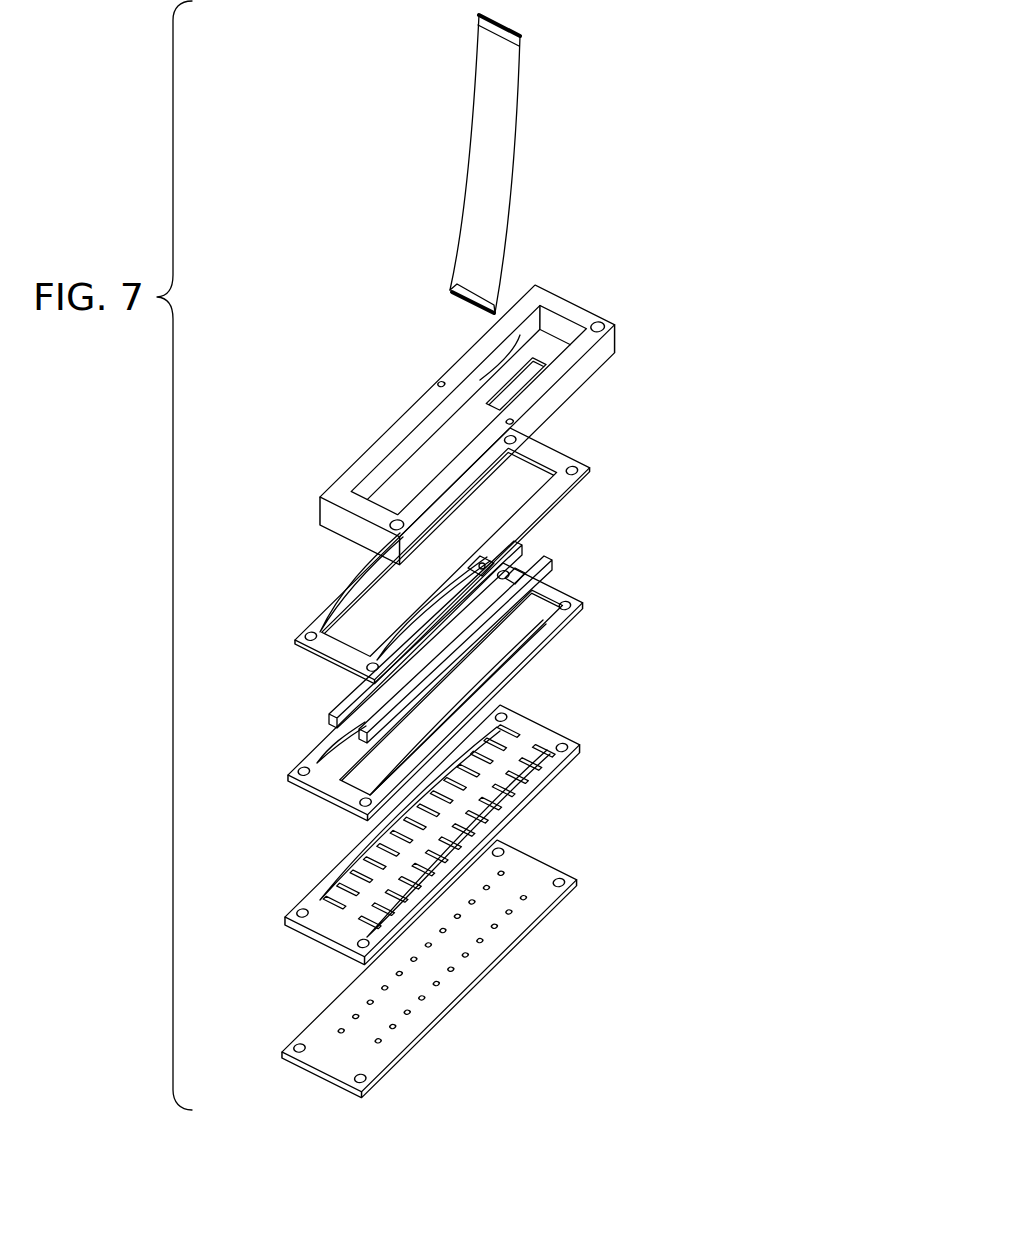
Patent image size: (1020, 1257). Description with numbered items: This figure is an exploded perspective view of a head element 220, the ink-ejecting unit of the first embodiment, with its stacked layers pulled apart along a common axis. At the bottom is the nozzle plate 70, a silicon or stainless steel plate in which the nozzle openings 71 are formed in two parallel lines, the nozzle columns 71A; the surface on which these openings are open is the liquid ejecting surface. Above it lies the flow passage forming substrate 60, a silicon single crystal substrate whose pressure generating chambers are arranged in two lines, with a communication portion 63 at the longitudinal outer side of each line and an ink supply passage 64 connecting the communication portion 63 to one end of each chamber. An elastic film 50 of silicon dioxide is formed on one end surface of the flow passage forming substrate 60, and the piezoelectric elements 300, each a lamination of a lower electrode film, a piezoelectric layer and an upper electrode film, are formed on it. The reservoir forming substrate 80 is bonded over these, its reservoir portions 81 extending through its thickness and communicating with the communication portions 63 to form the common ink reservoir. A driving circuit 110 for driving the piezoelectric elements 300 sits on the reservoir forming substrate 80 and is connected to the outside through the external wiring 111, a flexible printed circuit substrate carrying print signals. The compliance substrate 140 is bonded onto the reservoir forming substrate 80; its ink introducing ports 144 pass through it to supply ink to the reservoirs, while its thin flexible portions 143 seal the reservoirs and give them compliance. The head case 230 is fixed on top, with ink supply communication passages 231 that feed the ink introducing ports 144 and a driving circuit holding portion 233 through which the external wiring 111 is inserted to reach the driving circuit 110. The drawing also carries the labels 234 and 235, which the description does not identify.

The head element 220 is at (770, 222).
The external wiring 111 is at (488, 183).
The head case 230 is at (598, 358).
The ink supply communication passages 231 is at (547, 397).
The driving circuit holding portion 233 is at (502, 370).
The mounting holes 234 is at (570, 468).
The housing holes 235 is at (601, 320).
The compliance substrate 140 is at (583, 473).
The flexible portions 143 is at (330, 658).
The ink introducing ports 144 is at (523, 538).
The driving circuit 110 is at (540, 563).
The reservoir forming substrate 80 is at (583, 627).
The reservoir portions 81 is at (522, 664).
The flow passage forming substrate 60 is at (522, 718).
The communication portion 63 is at (557, 773).
The ink supply passage 64 is at (503, 816).
The nozzle plate 70 is at (528, 853).
The nozzle openings 71 is at (488, 932).
The nozzle columns 71A is at (316, 1058).
The piezoelectric elements 300 is at (336, 915).
The elastic film 50 is at (345, 933).